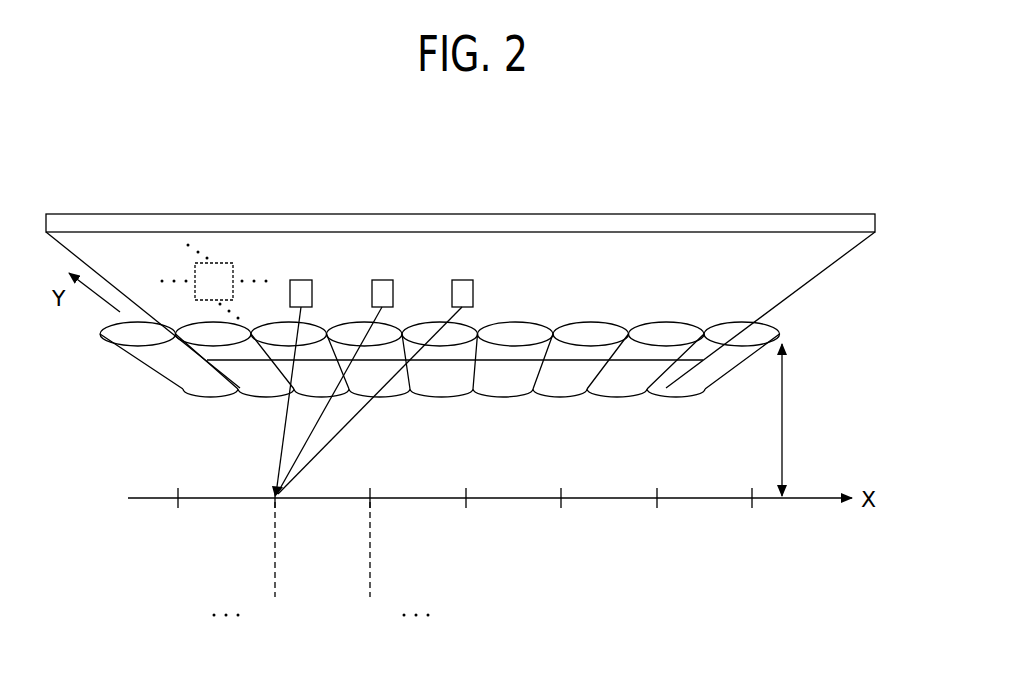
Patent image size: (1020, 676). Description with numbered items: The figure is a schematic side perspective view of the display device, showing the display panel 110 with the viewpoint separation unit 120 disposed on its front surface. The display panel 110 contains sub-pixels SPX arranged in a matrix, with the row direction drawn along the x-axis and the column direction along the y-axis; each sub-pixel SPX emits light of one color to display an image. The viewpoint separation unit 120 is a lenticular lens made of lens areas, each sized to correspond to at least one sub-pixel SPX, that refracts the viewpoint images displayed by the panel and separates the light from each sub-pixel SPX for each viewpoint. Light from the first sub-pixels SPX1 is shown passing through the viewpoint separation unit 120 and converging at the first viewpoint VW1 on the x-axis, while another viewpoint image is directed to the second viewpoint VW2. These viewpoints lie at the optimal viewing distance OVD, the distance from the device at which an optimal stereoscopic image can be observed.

The display panel 110 is at (808, 212).
The viewpoint separation unit 120 is at (786, 326).
The first sub-pixels SPX1 is at (462, 280).
The sub-pixel SPX is at (214, 282).
The first viewpoint VW1 is at (274, 566).
The second viewpoint VW2 is at (369, 566).
The optimal viewing distance OVD is at (802, 420).